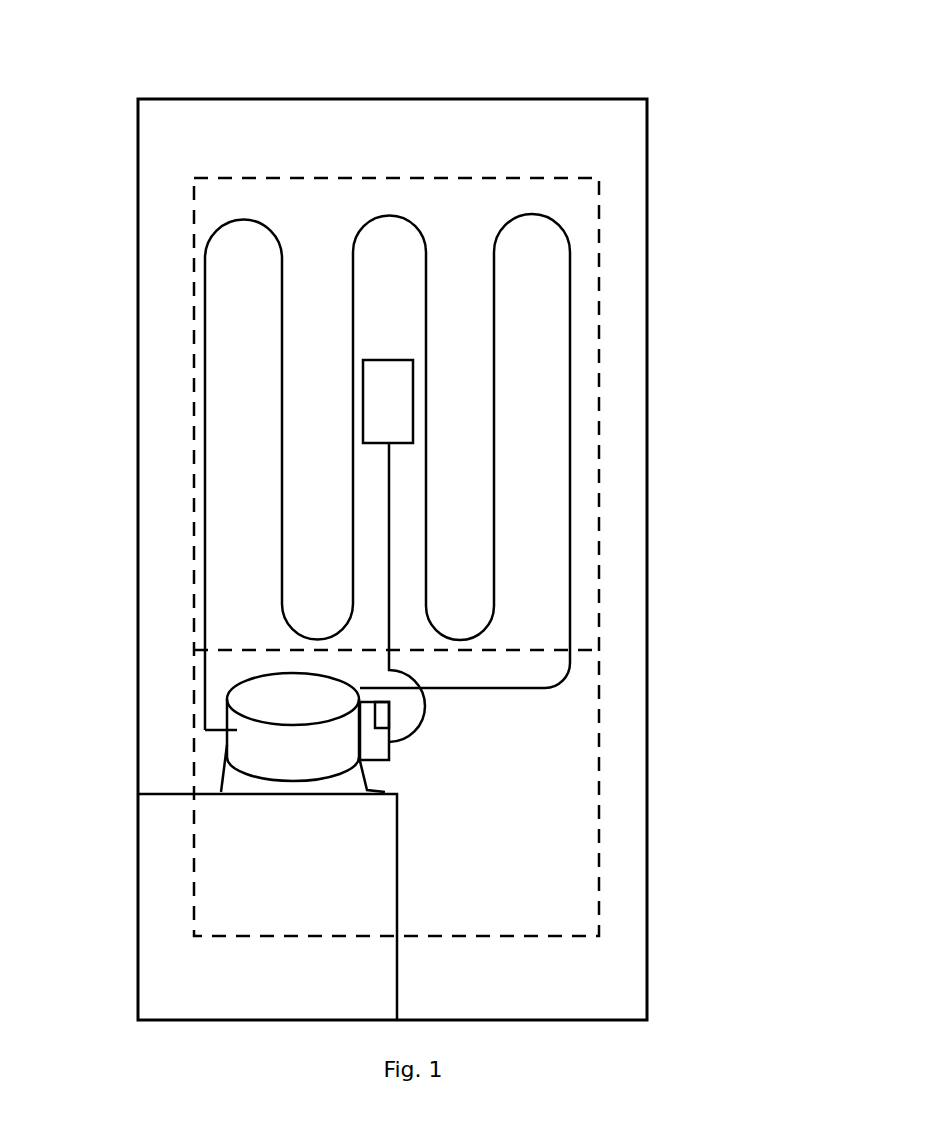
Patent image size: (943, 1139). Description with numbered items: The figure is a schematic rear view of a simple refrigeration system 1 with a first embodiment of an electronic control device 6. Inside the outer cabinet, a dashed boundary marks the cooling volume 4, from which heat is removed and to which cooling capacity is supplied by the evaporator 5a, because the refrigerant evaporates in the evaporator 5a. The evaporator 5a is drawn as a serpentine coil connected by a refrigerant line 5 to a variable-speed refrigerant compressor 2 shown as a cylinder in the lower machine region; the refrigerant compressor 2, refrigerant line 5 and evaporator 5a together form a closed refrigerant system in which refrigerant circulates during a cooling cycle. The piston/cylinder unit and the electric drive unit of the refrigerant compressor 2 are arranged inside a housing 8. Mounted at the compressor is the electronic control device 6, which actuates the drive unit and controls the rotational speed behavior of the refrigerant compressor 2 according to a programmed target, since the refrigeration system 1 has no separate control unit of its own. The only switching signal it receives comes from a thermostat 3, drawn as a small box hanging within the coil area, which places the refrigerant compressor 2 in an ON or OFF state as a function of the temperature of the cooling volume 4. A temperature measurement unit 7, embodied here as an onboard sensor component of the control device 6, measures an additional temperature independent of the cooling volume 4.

The refrigeration system 1 is at (533, 147).
The variable-speed refrigerant compressor 2 is at (282, 700).
The thermostat 3 is at (393, 423).
The cooling volume 4 is at (600, 686).
The refrigerant line 5 is at (492, 385).
The evaporator 5a is at (537, 290).
The electronic control device 6 is at (373, 749).
The temperature measurement unit 7 is at (377, 718).
The housing 8 is at (262, 750).